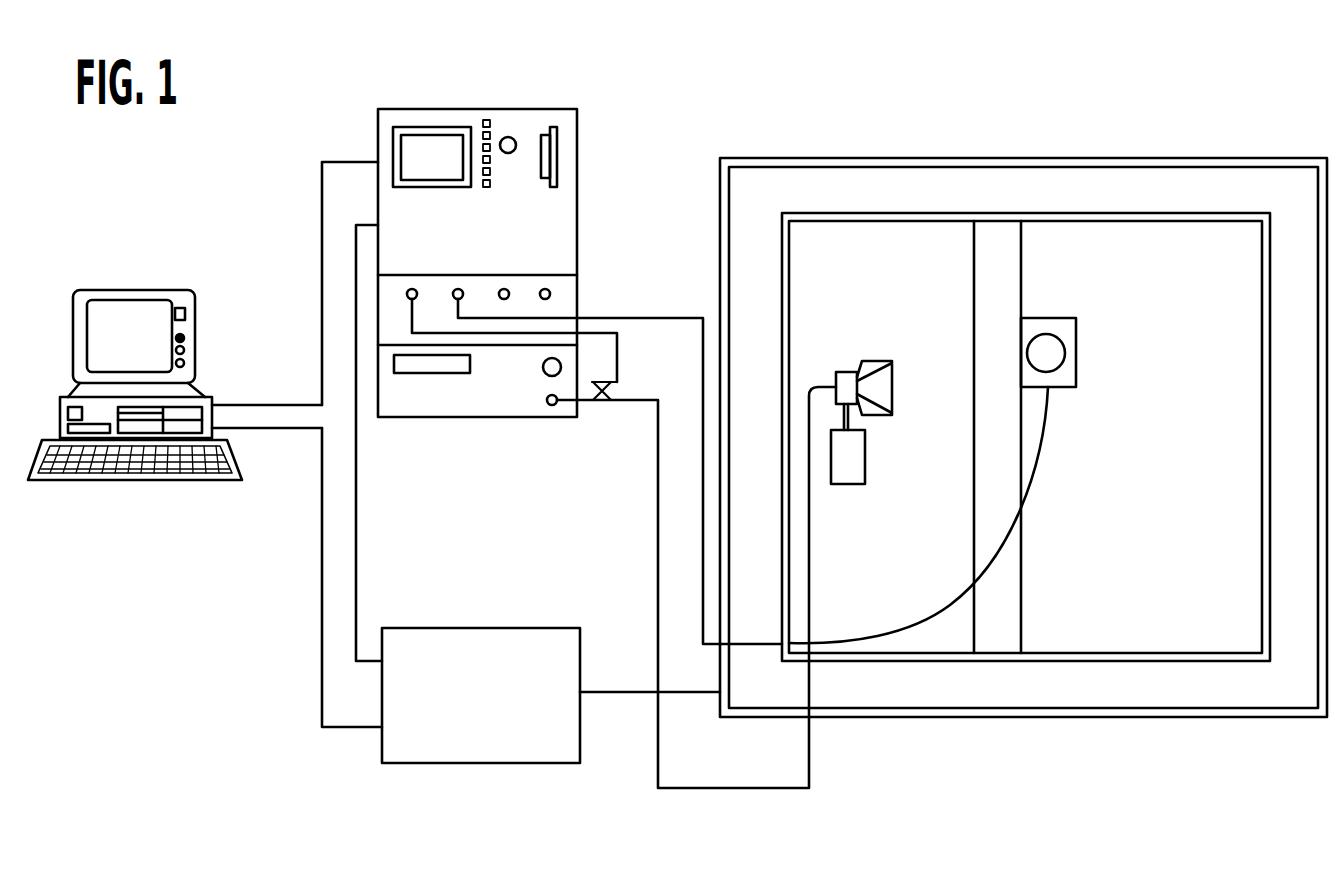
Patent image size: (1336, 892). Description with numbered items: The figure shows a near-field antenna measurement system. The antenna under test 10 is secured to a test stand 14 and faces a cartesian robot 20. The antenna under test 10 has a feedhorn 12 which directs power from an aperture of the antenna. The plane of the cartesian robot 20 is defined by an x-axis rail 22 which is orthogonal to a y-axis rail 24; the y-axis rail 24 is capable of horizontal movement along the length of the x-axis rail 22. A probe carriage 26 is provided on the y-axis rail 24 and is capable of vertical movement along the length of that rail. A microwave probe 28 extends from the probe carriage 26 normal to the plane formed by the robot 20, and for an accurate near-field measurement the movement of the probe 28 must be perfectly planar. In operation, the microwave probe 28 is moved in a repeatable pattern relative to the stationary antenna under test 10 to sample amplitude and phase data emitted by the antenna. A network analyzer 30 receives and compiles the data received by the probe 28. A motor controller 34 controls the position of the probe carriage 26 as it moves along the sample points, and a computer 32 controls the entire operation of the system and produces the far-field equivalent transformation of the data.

The antenna under test 10 is at (832, 368).
The feedhorn 12 is at (877, 362).
The test stand 14 is at (856, 455).
The cartesian robot 20 is at (1085, 158).
The x-axis rail 22 is at (1112, 646).
The y-axis rail 24 is at (1022, 597).
The probe carriage 26 is at (1055, 318).
The microwave probe 28 is at (1053, 357).
The network analyzer 30 is at (505, 109).
The computer 32 is at (140, 289).
The motor controller 34 is at (508, 764).